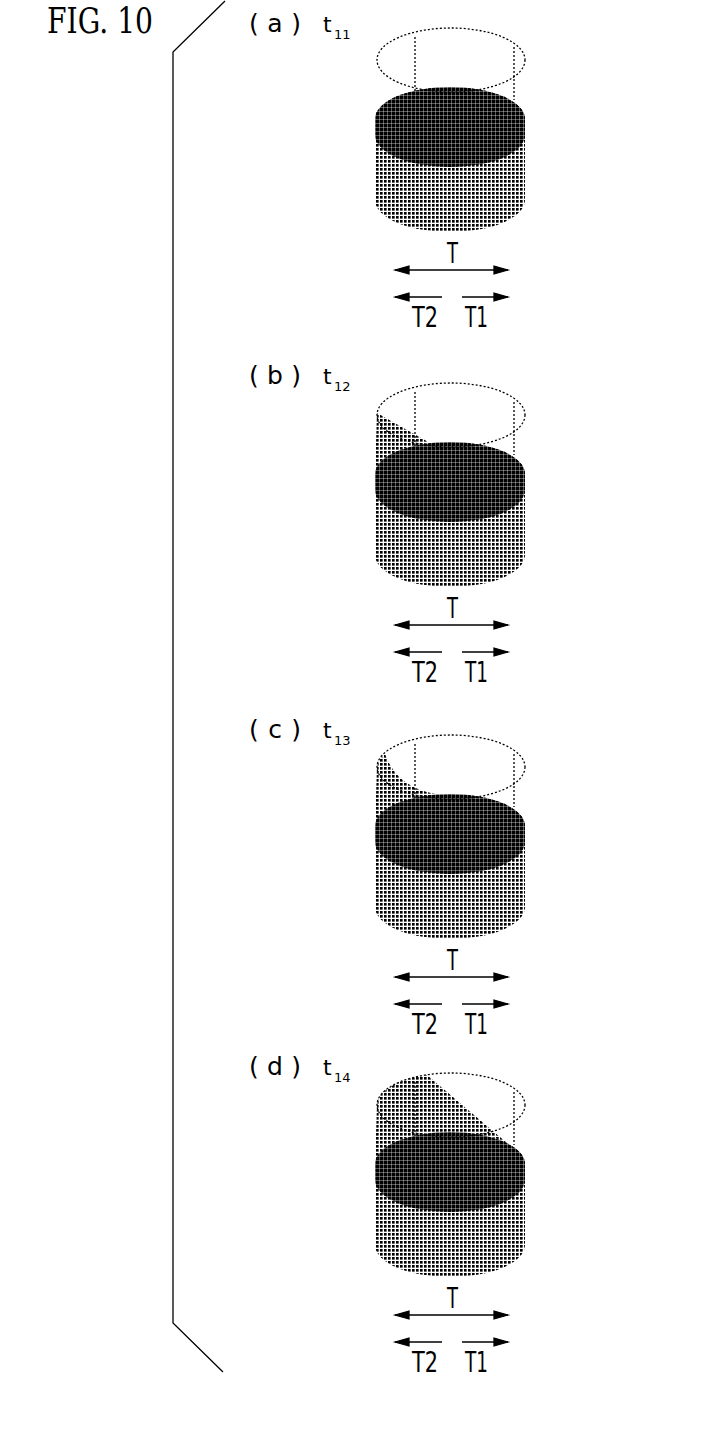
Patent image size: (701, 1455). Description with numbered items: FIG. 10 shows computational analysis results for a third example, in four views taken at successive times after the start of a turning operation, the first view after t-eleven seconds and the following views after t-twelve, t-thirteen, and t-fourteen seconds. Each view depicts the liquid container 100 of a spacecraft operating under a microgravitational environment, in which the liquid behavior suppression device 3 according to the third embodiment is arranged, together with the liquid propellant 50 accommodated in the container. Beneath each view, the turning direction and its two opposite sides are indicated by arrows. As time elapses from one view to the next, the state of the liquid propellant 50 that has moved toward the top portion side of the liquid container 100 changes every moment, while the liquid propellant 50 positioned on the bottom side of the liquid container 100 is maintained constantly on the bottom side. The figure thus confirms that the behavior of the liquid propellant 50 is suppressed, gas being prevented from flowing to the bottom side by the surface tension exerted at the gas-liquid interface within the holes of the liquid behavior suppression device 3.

The liquid container 100 is at (541, 80).
The liquid behavior suppression device 3 is at (512, 125).
The liquid propellant 50 is at (502, 183).